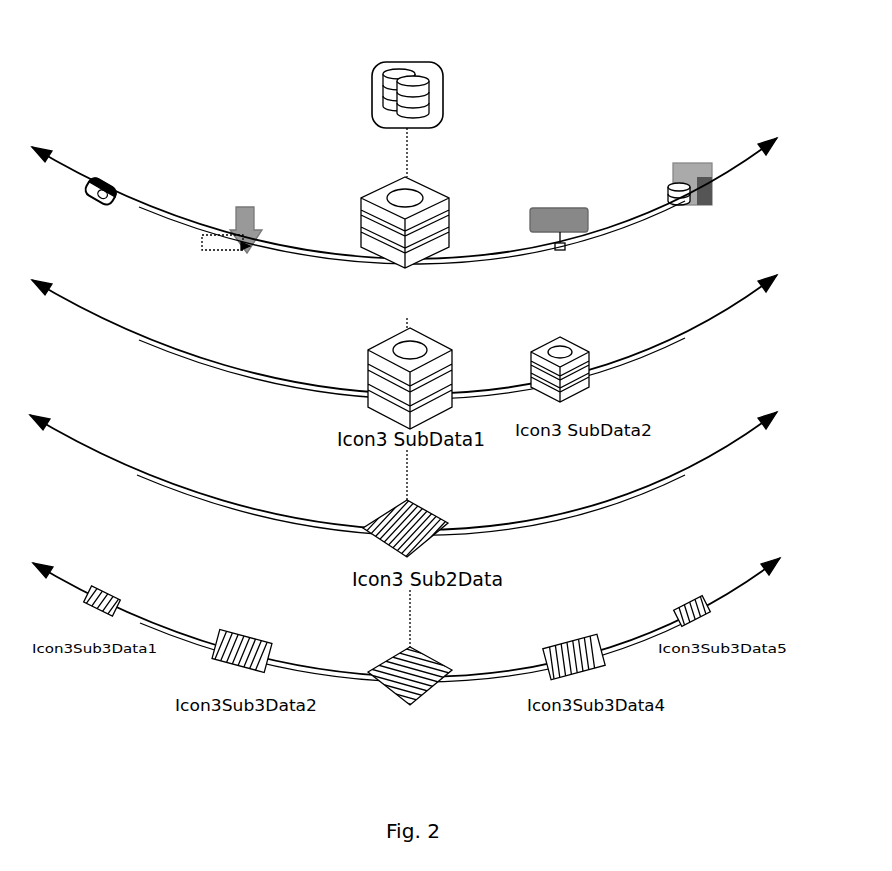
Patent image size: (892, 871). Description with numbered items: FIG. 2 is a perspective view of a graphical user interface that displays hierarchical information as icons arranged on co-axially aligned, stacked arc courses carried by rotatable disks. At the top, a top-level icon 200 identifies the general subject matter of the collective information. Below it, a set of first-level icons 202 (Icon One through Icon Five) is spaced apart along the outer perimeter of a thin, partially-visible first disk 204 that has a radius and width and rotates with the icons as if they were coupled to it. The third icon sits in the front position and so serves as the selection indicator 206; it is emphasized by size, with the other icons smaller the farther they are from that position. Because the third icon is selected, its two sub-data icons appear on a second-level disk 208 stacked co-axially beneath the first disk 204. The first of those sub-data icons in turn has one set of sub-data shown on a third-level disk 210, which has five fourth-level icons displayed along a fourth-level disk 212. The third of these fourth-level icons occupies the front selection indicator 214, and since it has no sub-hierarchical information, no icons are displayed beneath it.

The top-level icon 200 is at (442, 72).
The first-level icons 202 is at (592, 148).
The first disk 204 is at (732, 170).
The selection indicator 206 is at (452, 240).
The second-level disk 208 is at (743, 300).
The third-level disk 210 is at (743, 437).
The fourth-level disk 212 is at (753, 570).
The front selection indicator 214 is at (398, 650).